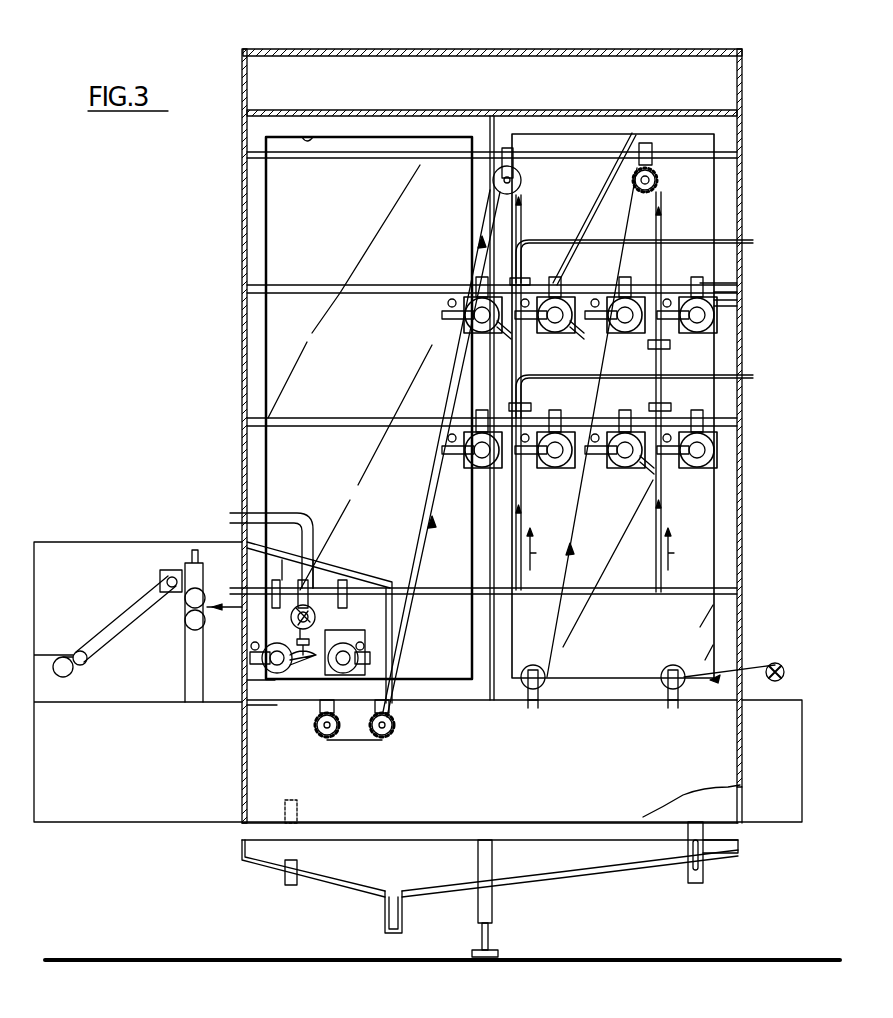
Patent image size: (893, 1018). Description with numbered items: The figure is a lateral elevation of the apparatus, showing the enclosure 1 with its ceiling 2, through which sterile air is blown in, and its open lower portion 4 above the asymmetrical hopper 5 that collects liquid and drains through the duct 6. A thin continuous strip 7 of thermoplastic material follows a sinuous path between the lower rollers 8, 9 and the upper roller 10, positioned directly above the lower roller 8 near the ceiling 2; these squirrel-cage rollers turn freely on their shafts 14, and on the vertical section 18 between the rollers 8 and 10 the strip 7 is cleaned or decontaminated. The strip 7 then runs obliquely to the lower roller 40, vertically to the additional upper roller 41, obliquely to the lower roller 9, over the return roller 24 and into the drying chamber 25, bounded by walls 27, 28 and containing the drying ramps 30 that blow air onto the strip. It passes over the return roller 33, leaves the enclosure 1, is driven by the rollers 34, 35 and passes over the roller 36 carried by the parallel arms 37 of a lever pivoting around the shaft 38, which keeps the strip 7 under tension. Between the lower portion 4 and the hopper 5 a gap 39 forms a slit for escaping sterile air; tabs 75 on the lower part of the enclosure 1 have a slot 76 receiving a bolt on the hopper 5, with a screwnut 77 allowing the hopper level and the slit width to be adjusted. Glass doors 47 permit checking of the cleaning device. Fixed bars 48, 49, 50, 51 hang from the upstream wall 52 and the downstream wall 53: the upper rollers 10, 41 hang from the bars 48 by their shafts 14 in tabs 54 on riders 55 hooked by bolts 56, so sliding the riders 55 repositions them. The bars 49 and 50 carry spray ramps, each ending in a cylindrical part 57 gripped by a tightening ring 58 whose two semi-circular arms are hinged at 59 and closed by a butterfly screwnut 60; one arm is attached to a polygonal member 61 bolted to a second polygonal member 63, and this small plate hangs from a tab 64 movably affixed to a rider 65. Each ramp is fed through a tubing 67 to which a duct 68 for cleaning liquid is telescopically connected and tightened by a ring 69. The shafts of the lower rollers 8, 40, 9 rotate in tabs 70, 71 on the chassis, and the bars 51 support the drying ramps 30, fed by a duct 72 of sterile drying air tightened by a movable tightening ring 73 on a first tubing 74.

The enclosure 1 is at (612, 50).
The ceiling 2 is at (343, 110).
The lower portion 4 is at (740, 743).
The hopper 5 is at (365, 880).
The duct 6 is at (403, 904).
The strip 7 is at (219, 598).
The lower roller 8 is at (674, 665).
The lower roller 9 is at (390, 735).
The upper roller 10 is at (655, 170).
The longitudinal shaft 14 is at (640, 180).
The vertical section 18 is at (660, 530).
The return roller 24 is at (328, 737).
The drying chamber 25 is at (322, 547).
The wall 27 is at (403, 592).
The wall 28 is at (265, 705).
The ramps 30 is at (346, 642).
The return roller 33 is at (285, 560).
The roller 34 is at (192, 588).
The roller 35 is at (190, 625).
The roller 36 is at (85, 665).
The parallel arms 37 is at (126, 622).
The shaft 38 is at (168, 575).
The gap 39 is at (585, 868).
The lower roller 40 is at (536, 665).
The upper roller 41 is at (490, 205).
The glass doors 47 is at (307, 136).
The fixed bars 48 is at (361, 159).
The fixed bars 49 is at (305, 287).
The fixed bars 50 is at (308, 420).
The fixed bars 51 is at (453, 588).
The upstream wall 52 is at (742, 552).
The downstream wall 53 is at (240, 358).
The tabs 54 is at (508, 164).
The riders 55 is at (504, 150).
The bolts 56 is at (642, 145).
The cylindrical part 57 is at (467, 333).
The tightening ring 58 is at (477, 300).
The hinge 59 is at (556, 270).
The butterfly screwnut 60 is at (465, 309).
The polygonal member 61 is at (717, 318).
The second polygonal member 63 is at (739, 294).
The tab 64 is at (717, 286).
The rider 65 is at (693, 285).
The tubing 67 is at (657, 342).
The duct 68 is at (708, 239).
The tightening ring 69 is at (526, 266).
The tab 70 is at (533, 705).
The tab 71 is at (390, 710).
The duct 72 is at (276, 510).
The movable tightening ring 73 is at (320, 628).
The first tubing 74 is at (299, 666).
The tabs 75 is at (707, 877).
The slot 76 is at (686, 882).
The screwnut 77 is at (699, 848).